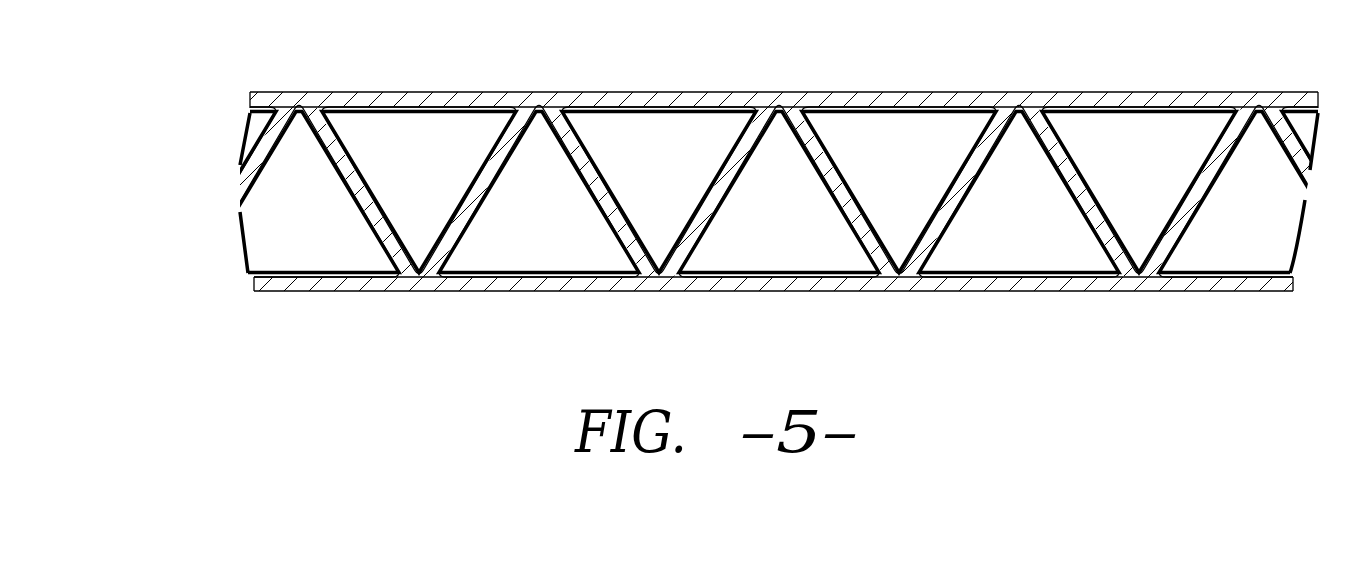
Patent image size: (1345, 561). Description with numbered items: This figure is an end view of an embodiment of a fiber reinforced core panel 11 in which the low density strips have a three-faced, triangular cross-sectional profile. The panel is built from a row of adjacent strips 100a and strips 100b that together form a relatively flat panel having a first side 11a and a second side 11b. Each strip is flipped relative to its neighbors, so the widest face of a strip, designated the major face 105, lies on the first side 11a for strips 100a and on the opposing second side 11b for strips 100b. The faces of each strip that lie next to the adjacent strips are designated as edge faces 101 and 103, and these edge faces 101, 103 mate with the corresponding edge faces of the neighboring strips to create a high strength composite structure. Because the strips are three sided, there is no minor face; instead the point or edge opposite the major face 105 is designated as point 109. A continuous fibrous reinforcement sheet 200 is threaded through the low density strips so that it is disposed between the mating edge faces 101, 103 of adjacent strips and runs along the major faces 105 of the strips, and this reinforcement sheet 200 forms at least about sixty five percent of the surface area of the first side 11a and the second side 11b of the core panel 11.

The core panel 11 is at (160, 112).
The first side 11a is at (225, 280).
The second side 11b is at (223, 100).
The continuous fibrous reinforcement sheet 200 is at (354, 95).
The major face 105 is at (425, 108).
The edge face 101 is at (490, 148).
The edge face 103 is at (827, 148).
The point 109 is at (535, 108).
The low density strip 100a is at (780, 223).
The low density strip 100b is at (780, 166).